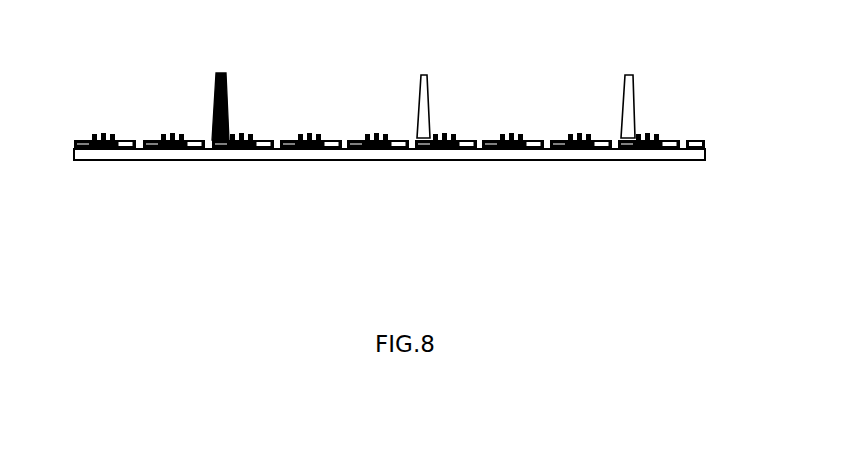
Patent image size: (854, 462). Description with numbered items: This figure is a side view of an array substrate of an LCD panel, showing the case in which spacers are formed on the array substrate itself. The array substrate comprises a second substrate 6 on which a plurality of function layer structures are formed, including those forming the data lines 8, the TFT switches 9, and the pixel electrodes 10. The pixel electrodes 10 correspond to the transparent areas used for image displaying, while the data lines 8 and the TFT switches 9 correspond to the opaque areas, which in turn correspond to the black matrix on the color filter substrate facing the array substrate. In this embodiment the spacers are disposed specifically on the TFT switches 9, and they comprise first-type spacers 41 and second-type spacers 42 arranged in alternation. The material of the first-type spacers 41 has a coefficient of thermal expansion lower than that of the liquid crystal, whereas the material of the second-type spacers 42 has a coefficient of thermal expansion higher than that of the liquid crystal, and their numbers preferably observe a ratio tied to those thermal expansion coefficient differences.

The second substrate 6 is at (320, 152).
The data lines 8 is at (563, 152).
The TFT switches 9 is at (374, 152).
The pixel electrodes 10 is at (457, 152).
The first-type spacers 41 is at (222, 108).
The second-type spacers 42 is at (426, 118).